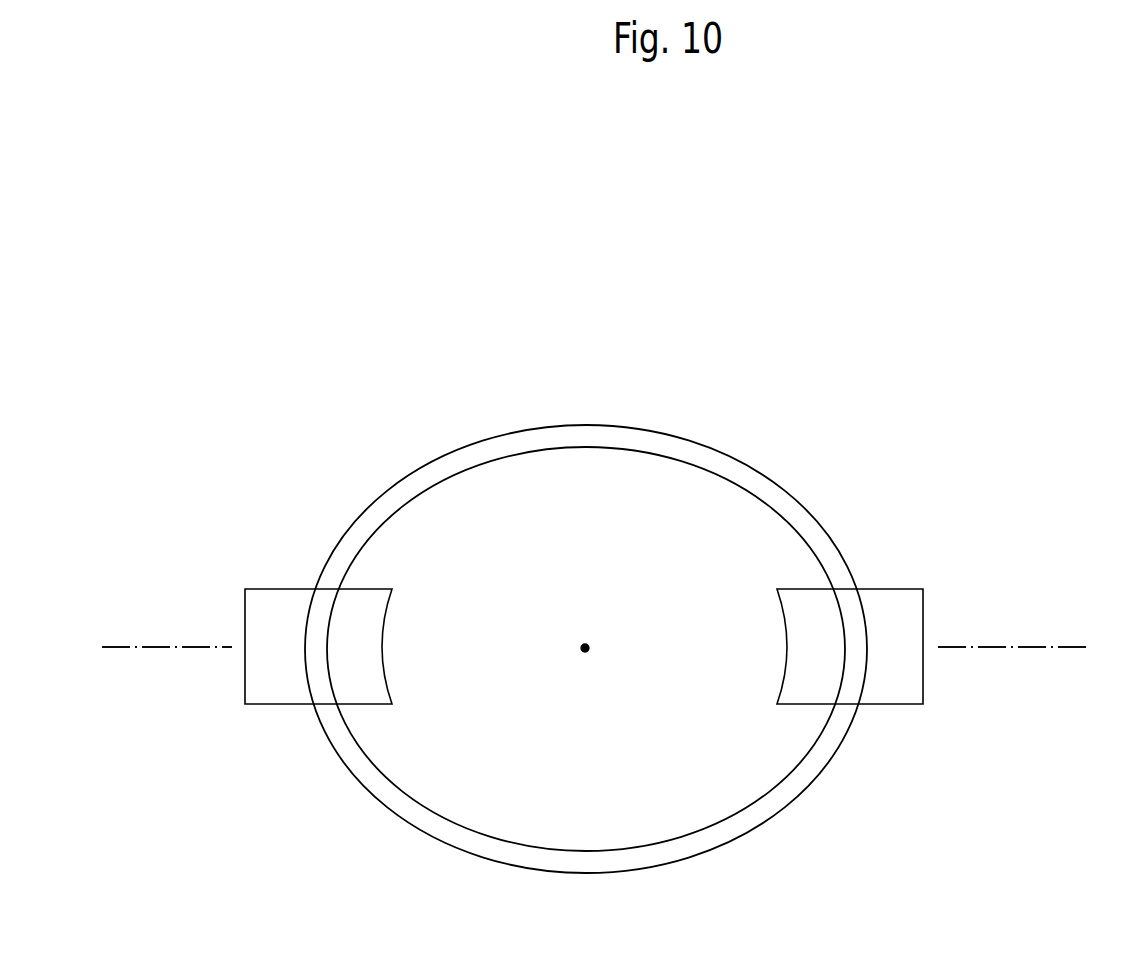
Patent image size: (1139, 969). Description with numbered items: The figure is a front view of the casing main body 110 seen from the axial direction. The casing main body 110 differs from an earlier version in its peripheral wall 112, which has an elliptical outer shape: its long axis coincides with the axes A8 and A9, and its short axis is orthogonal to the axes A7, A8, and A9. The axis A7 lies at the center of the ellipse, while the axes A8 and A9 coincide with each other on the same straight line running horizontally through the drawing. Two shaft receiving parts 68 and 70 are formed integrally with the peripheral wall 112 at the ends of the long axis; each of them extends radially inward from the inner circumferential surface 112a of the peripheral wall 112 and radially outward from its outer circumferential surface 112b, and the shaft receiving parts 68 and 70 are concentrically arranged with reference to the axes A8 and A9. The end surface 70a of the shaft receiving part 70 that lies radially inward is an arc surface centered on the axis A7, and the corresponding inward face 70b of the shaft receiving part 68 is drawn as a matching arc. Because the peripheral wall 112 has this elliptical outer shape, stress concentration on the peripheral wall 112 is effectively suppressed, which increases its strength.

The casing main body 110 is at (800, 281).
The peripheral wall 112 is at (662, 440).
The inner circumferential surface 112a is at (547, 448).
The outer circumferential surface 112b is at (550, 427).
The shaft receiving part 68 is at (272, 687).
The shaft receiving part 70 is at (897, 688).
The end surface 70a is at (787, 648).
The concave contact surface of first support block 70b is at (387, 648).
The axis A7 is at (590, 653).
The axis A8 is at (125, 648).
The axis A9 is at (1050, 648).